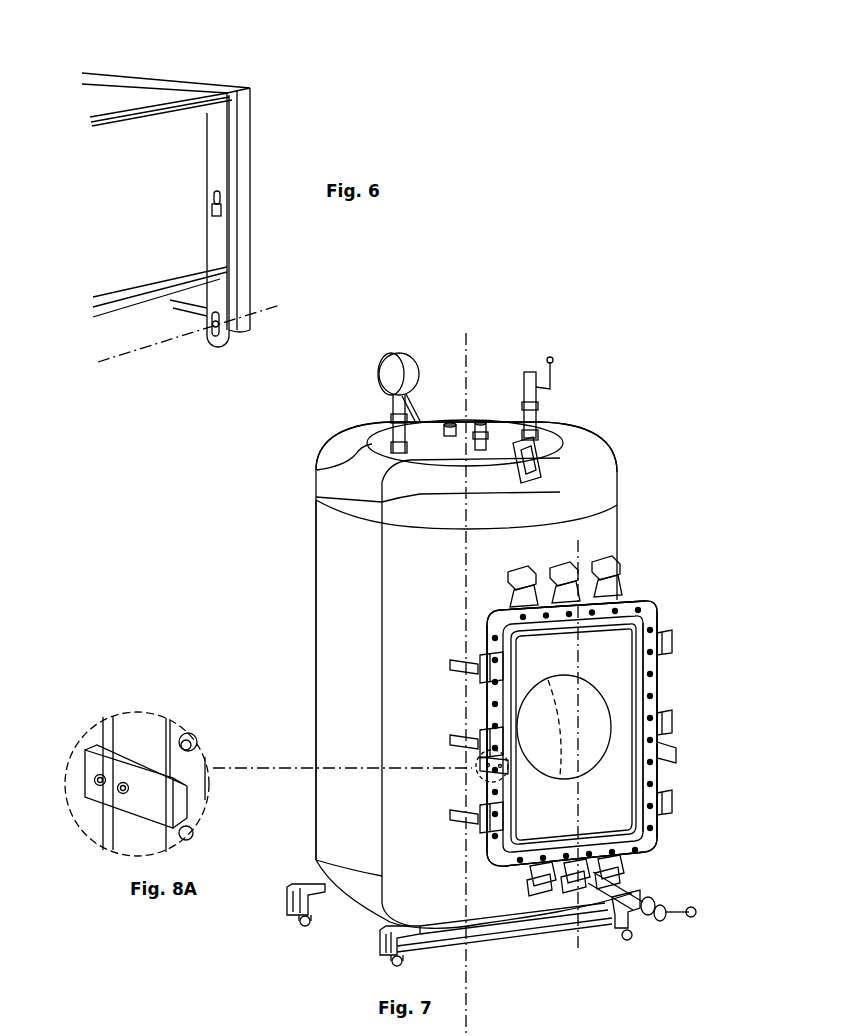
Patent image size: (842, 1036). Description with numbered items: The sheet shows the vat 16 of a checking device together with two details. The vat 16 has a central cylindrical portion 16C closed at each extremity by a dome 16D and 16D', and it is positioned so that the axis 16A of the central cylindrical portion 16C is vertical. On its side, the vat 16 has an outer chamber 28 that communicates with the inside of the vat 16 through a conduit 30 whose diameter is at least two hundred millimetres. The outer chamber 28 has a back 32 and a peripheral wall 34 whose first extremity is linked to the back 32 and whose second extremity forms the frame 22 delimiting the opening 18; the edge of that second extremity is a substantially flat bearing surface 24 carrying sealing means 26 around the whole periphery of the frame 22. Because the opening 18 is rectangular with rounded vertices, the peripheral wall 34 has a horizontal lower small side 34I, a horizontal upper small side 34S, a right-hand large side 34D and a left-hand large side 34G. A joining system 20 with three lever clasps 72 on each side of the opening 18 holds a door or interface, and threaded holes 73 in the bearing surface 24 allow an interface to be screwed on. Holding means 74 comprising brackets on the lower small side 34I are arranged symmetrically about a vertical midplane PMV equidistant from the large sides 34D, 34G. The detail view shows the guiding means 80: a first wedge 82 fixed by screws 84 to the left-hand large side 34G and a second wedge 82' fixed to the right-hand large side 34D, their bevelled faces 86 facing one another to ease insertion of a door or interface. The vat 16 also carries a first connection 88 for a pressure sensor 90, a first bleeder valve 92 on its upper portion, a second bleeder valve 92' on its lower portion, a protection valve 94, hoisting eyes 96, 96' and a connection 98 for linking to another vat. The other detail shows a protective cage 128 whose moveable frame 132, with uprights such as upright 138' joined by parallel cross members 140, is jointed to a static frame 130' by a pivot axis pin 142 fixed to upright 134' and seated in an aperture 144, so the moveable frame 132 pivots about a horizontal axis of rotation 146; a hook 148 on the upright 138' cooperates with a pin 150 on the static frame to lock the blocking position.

In FIG. 7, the vat 16 is at (306, 446).
In FIG. 7, the axis 16A is at (320, 497).
In FIG. 7, the central cylindrical portion 16C is at (330, 615).
In FIG. 7, the dome 16D is at (464, 438).
In FIG. 7, the dome 16D' is at (463, 927).
In FIG. 7, the opening 18 is at (586, 748).
In FIG. 7, the joining system 20 is at (664, 629).
In FIG. 7, the frame 22 is at (656, 678).
In FIG. 8A, the frame 22 is at (176, 726).
In FIG. 7, the bearing surface 24 is at (660, 772).
In FIG. 7, the sealing means 26 is at (470, 676).
In FIG. 7, the outer chamber 28 is at (604, 657).
In FIG. 7, the conduit 30 is at (571, 782).
In FIG. 7, the back 32 is at (605, 830).
In FIG. 7, the peripheral wall 34 is at (640, 790).
In FIG. 7, the upper small side 34S is at (600, 535).
In FIG. 7, the right-hand large side 34D is at (655, 762).
In FIG. 7, the left-hand large side 34G is at (500, 715).
In FIG. 8A, the left-hand large side 34G is at (127, 740).
In FIG. 7, the lower small side 34I is at (606, 930).
In FIG. 7, the lever clasps 72 is at (598, 563).
In FIG. 7, the threaded holes 73 is at (510, 834).
In FIG. 7, the holding means 74 is at (628, 884).
In FIG. 7, the guiding means 80 is at (684, 746).
In FIG. 8A, the guiding means 80 is at (236, 795).
In FIG. 8A, the first wedge 82 is at (135, 816).
In FIG. 7, the second wedge 82' is at (687, 730).
In FIG. 8A, the screws 84 is at (117, 790).
In FIG. 8A, the bevelled faces 86 is at (190, 768).
In FIG. 7, the first connection 88 is at (320, 469).
In FIG. 7, the pressure sensor 90 is at (405, 360).
In FIG. 7, the first bleeder valve 92 is at (546, 368).
In FIG. 7, the second bleeder valve 92' is at (657, 916).
In FIG. 7, the protection valve 94 is at (483, 421).
In FIG. 7, the hoisting eye 96 is at (565, 428).
In FIG. 7, the hoisting eye 96' is at (427, 390).
In FIG. 7, the connection 98 is at (453, 422).
In FIG. 7, the vertical midplane PMV is at (578, 950).
In FIG. 6, the protective cage 128 is at (258, 76).
In FIG. 6, the static frame 130' is at (166, 57).
In FIG. 6, the moveable frame 132 is at (114, 108).
In FIG. 6, the upright 134' is at (266, 211).
In FIG. 6, the upright 138' is at (181, 221).
In FIG. 6, the cross member 140 is at (100, 128).
In FIG. 6, the pivot axis pin 142 is at (211, 326).
In FIG. 6, the aperture 144 is at (216, 340).
In FIG. 6, the axis of rotation 146 is at (100, 354).
In FIG. 6, the hook 148 is at (212, 210).
In FIG. 6, the pin 150 is at (214, 197).